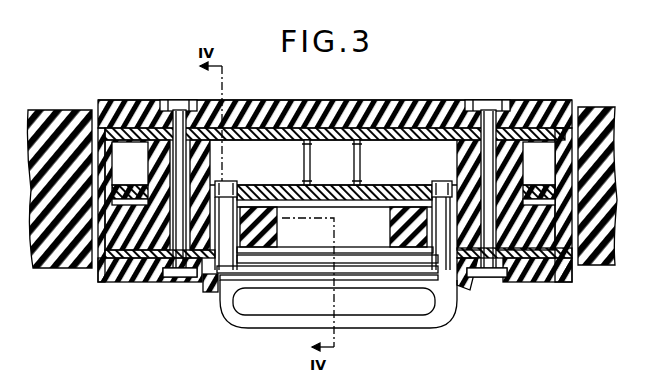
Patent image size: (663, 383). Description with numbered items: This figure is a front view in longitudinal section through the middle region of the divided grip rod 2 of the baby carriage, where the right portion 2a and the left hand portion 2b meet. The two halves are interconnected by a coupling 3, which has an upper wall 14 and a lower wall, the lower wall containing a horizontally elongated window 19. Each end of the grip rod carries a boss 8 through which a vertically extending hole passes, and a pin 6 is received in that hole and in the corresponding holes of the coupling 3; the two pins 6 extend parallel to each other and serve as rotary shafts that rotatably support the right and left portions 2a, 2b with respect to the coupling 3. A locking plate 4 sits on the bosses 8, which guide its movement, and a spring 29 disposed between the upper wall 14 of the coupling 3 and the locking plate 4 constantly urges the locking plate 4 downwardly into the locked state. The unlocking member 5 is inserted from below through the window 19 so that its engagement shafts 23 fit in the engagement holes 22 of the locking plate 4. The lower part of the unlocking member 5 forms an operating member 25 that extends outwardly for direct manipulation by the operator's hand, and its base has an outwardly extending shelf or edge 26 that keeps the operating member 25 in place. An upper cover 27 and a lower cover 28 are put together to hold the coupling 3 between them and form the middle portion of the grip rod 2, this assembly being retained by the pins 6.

The grip rod 2 is at (322, 192).
The right portion 2a is at (594, 262).
The left hand portion 2b is at (65, 262).
The coupling 3 is at (340, 105).
The locking plate 4 is at (547, 177).
The unlocking member 5 is at (442, 323).
The pin 6 is at (180, 110).
The boss 8 is at (157, 103).
The upper wall 14 is at (374, 136).
The window 19 is at (397, 252).
The engagement hole 22 is at (440, 182).
The engagement shaft 23 is at (436, 180).
The operating member 25 is at (235, 315).
The shelf or edge 26 is at (222, 288).
The upper cover 27 is at (245, 102).
The lower cover 28 is at (117, 283).
The spring 29 is at (297, 106).